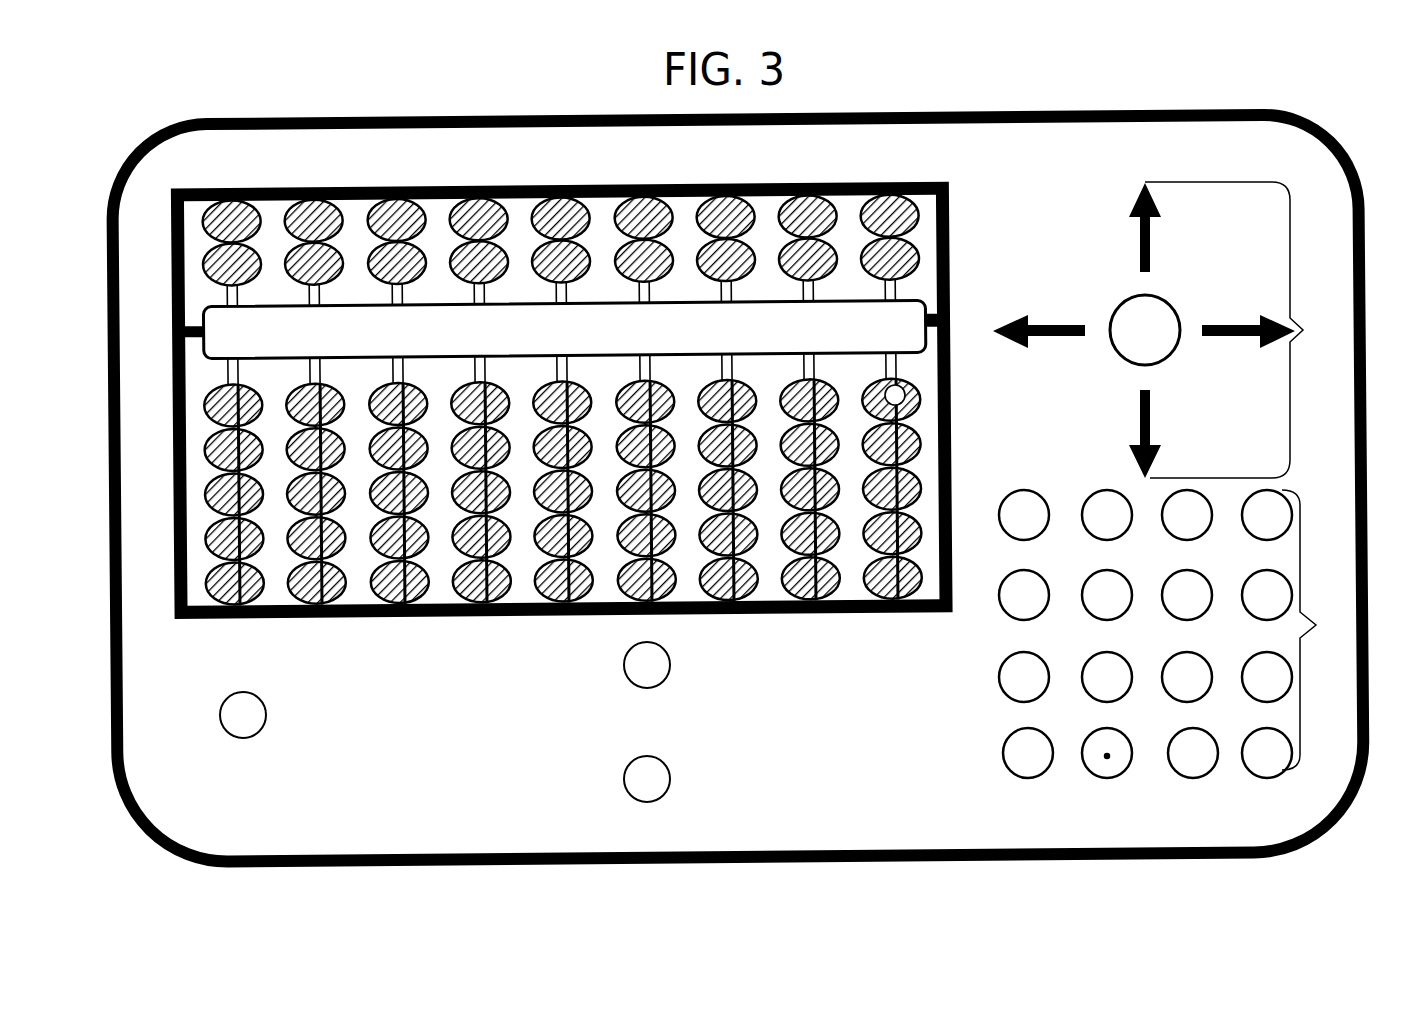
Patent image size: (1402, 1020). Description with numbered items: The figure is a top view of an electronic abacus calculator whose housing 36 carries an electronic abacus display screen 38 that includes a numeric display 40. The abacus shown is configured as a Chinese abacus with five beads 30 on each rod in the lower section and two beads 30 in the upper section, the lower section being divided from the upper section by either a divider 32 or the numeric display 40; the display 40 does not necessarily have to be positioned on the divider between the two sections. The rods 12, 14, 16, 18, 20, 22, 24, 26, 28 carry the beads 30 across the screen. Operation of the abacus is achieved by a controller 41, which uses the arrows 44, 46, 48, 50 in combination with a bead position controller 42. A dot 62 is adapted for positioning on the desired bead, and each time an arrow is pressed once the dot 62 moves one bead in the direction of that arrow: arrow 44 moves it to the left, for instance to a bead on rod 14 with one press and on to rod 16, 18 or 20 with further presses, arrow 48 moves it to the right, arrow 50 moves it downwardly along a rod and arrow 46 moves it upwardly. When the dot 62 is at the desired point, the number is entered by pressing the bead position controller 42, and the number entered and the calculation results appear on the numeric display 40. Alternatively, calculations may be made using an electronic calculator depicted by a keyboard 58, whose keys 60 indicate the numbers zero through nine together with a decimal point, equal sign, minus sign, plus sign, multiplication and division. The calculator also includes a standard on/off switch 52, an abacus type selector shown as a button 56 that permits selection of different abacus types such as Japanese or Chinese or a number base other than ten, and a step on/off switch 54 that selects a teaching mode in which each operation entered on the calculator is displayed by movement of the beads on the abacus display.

The rod 12 is at (902, 369).
The rod 14 is at (820, 369).
The rod 16 is at (738, 369).
The rod 18 is at (656, 369).
The rod 20 is at (573, 369).
The rod 22 is at (491, 369).
The rod 24 is at (409, 369).
The rod 26 is at (326, 369).
The rod 28 is at (244, 369).
The beads 30 is at (611, 400).
The divider 32 is at (561, 400).
The housing 36 is at (1349, 165).
The electronic abacus display screen 38 is at (588, 388).
The numeric display 40 is at (564, 328).
The controller 41 is at (1175, 330).
The bead position controller 42 is at (1159, 308).
The arrow 44 is at (1052, 337).
The arrow 46 is at (1141, 233).
The arrow 48 is at (1238, 324).
The arrow 50 is at (1150, 428).
The on/off switch 52 is at (646, 688).
The step on/off switch 54 is at (622, 779).
The abacus type selector button 56 is at (241, 738).
The keyboard 58 is at (1158, 636).
The keys 60 is at (1020, 487).
The dot 62 is at (903, 400).